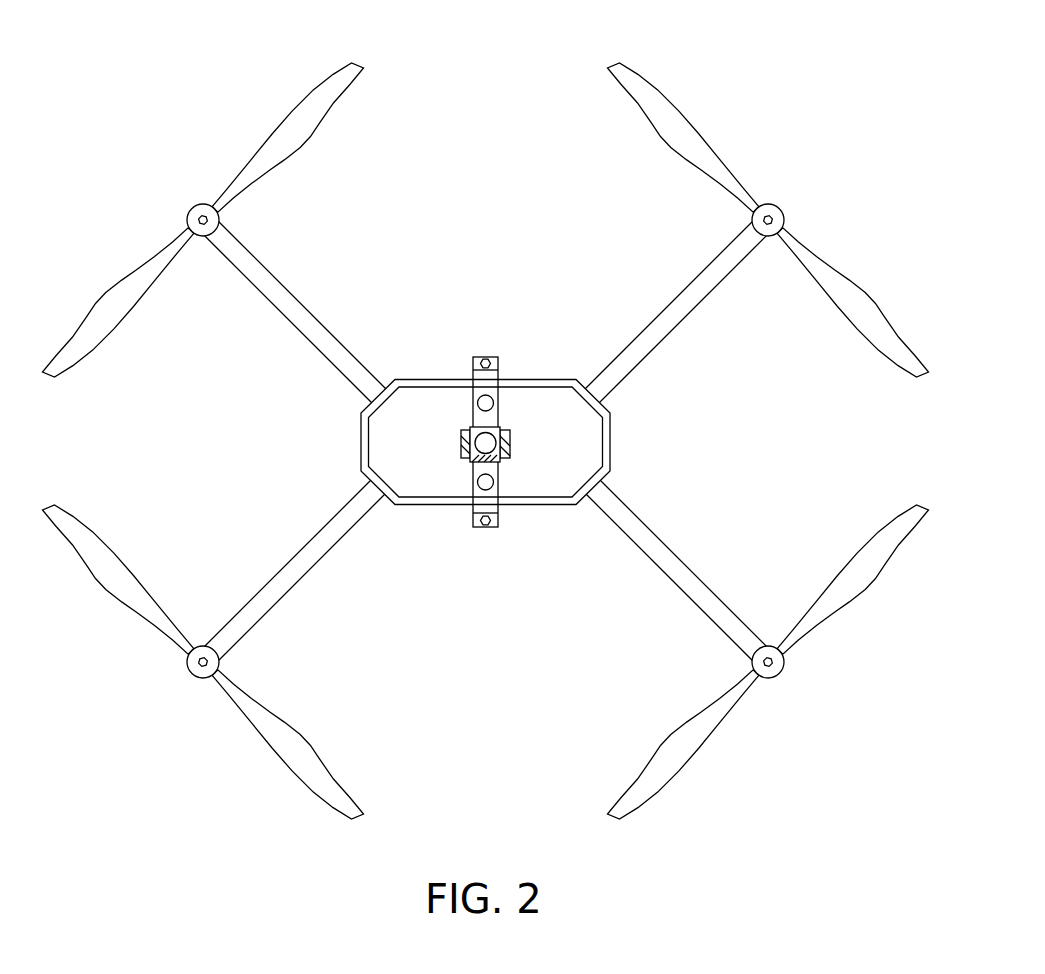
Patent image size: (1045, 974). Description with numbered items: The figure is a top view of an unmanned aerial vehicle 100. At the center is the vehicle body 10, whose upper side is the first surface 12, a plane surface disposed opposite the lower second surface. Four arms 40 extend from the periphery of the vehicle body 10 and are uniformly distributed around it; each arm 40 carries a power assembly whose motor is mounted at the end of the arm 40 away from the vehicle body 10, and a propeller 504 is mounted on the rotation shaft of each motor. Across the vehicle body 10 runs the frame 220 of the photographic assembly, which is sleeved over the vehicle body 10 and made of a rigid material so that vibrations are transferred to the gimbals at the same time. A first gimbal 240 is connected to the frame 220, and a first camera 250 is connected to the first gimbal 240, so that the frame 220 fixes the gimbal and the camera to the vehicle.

The unmanned aerial vehicle 100 is at (513, 468).
The vehicle body 10 is at (612, 460).
The first surface 12 is at (422, 403).
The arm 40 is at (282, 590).
The frame 220 is at (485, 497).
The first gimbal 240 is at (510, 443).
The first camera 250 is at (488, 427).
The propeller 504 is at (832, 608).